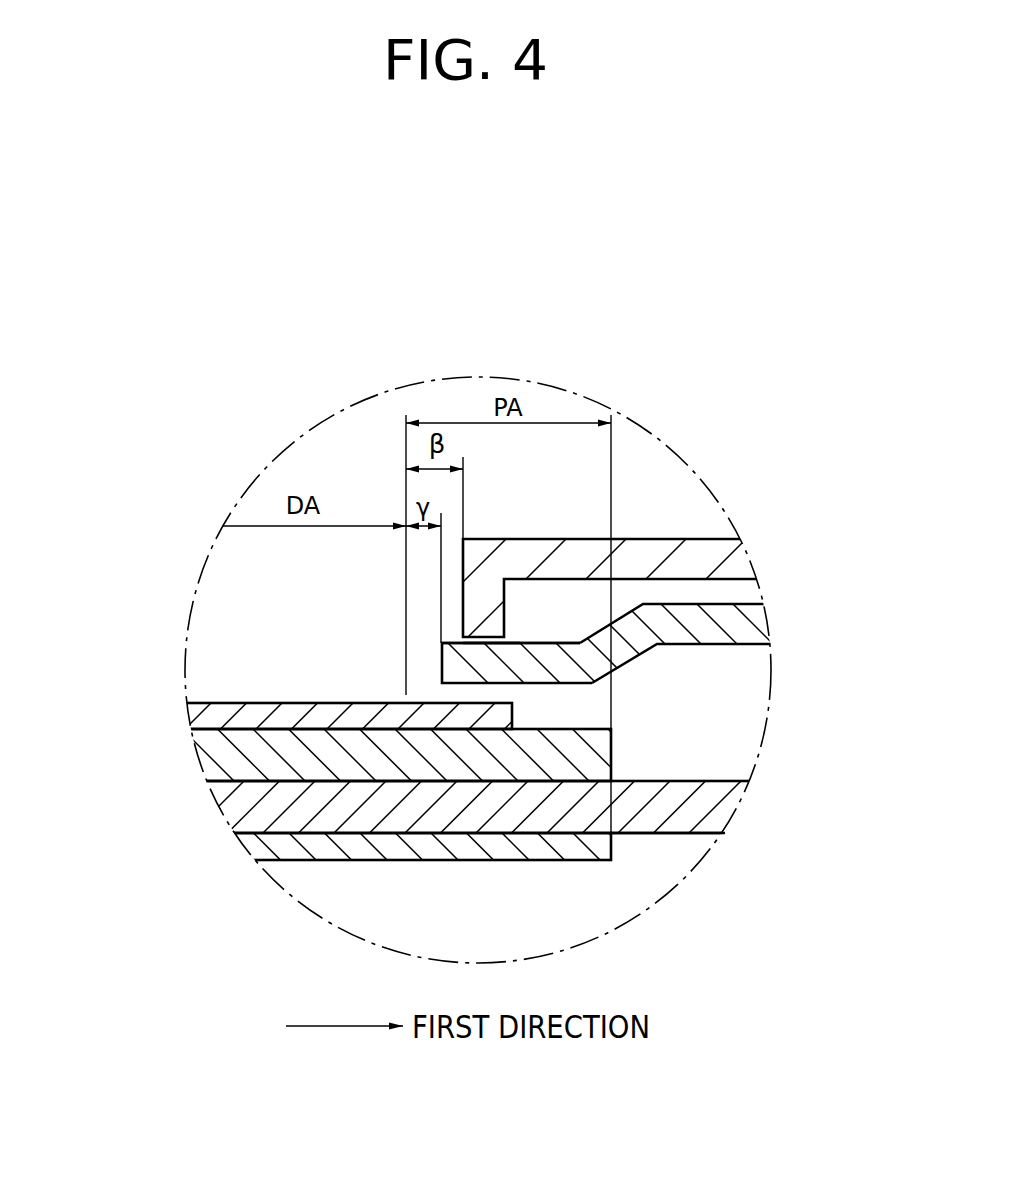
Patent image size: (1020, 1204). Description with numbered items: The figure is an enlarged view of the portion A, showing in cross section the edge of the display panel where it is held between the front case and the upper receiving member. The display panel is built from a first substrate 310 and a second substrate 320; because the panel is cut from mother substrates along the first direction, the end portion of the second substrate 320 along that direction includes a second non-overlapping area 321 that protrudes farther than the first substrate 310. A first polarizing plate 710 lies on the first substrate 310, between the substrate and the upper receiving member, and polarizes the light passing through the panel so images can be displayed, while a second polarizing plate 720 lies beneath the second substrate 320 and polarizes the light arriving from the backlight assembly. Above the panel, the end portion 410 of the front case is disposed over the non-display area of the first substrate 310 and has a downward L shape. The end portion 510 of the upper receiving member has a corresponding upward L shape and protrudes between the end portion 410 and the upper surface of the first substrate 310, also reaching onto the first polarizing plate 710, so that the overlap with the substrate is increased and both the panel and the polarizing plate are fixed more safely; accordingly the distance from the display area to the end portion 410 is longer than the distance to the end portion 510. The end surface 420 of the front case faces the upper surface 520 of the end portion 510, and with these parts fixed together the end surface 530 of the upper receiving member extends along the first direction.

The portion A is at (270, 462).
The first substrate 310 is at (207, 758).
The second substrate 320 is at (232, 815).
The second non-overlapping area 321 is at (653, 837).
The end portion of the front case 410 is at (733, 560).
The end surface of the front case 420 is at (487, 643).
The end portion of the upper receiving member 510 is at (747, 630).
The upper surface of the end portion of the upper receiving member 520 is at (517, 643).
The end surface of the upper receiving member 530 is at (442, 662).
The first polarizing plate 710 is at (197, 713).
The second polarizing plate 720 is at (263, 852).